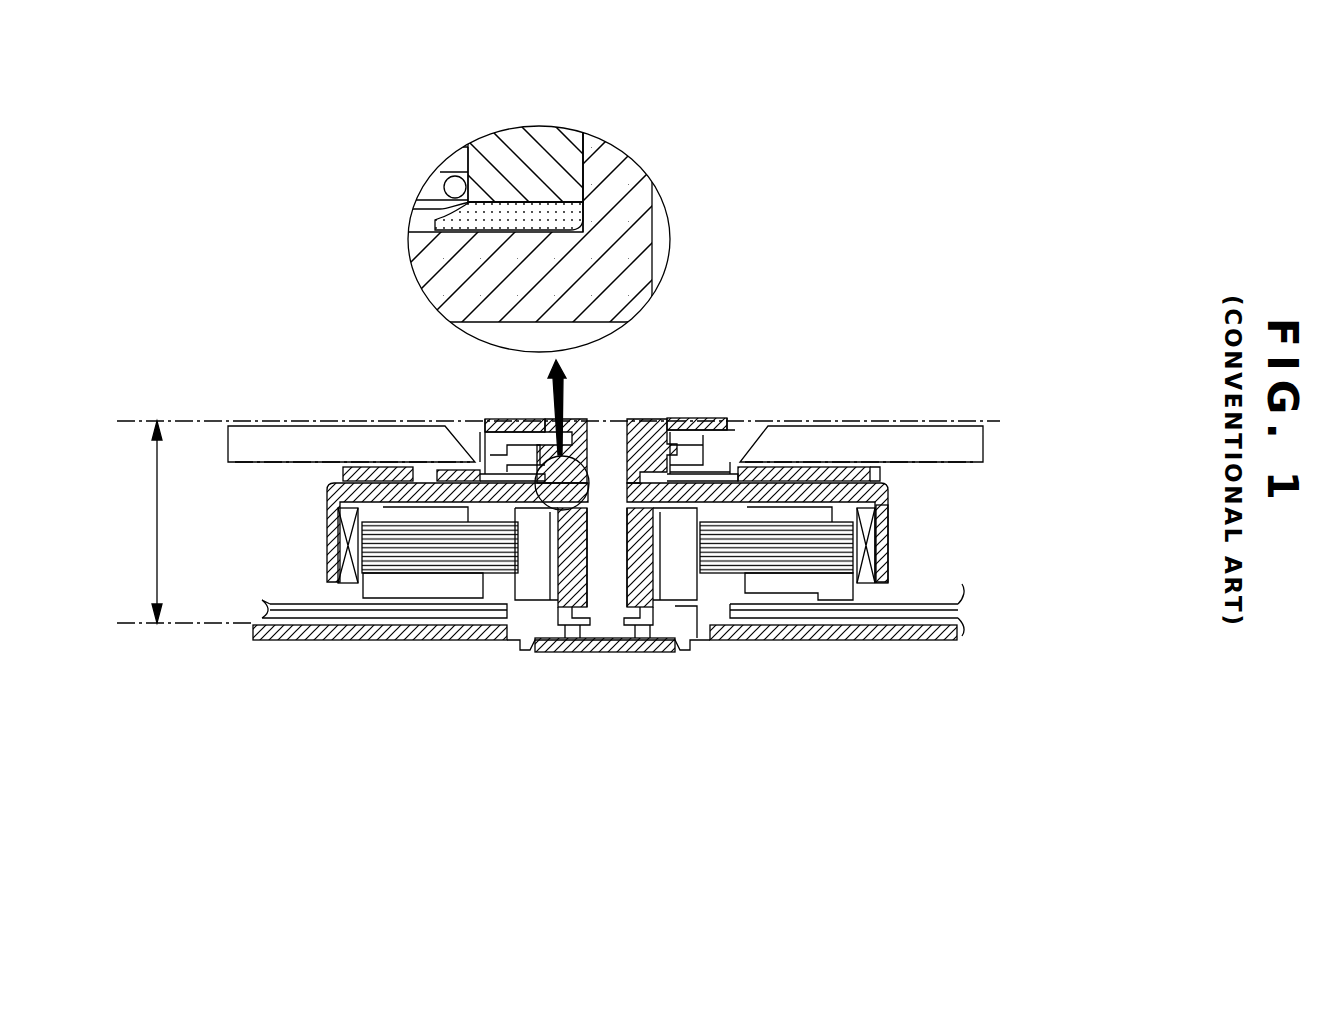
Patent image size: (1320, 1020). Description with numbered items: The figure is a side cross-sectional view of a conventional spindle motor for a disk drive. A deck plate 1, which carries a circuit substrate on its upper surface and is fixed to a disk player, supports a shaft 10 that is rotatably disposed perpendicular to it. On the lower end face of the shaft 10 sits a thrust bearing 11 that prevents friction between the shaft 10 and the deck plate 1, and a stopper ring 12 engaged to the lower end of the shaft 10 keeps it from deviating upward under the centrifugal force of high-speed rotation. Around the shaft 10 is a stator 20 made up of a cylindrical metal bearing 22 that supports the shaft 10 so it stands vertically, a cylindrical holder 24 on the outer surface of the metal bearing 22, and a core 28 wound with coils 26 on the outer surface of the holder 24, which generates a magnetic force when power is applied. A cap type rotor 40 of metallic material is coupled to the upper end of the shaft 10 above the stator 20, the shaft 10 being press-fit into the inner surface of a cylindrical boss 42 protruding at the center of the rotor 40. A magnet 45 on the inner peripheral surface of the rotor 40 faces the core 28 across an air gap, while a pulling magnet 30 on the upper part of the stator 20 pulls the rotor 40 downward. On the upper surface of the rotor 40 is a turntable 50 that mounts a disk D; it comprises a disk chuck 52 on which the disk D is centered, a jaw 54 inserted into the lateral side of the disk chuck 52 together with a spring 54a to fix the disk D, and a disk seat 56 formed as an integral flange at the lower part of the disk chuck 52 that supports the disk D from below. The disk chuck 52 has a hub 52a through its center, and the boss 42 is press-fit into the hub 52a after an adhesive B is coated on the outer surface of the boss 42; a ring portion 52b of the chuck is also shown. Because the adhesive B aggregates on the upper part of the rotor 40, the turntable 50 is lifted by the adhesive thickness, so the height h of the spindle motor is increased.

The deck plate 1 is at (893, 637).
The shaft 10 is at (558, 580).
The thrust bearing 11 is at (633, 655).
The stopper ring 12 is at (590, 552).
The stator 20 is at (480, 588).
The metal bearing 22 is at (647, 567).
The holder 24 is at (683, 620).
The coils 26 is at (758, 590).
The core 28 is at (802, 548).
The pulling magnet 30 is at (480, 515).
The rotor 40 is at (897, 480).
The boss 42 is at (653, 427).
The magnet 45 is at (883, 553).
The turntable 50 is at (323, 473).
The disk chuck 52 is at (713, 399).
The hub 52a is at (668, 422).
The rotor ring 52b is at (777, 467).
The jaw 54 is at (755, 436).
The spring 54a is at (725, 433).
The disk seat 56 is at (878, 468).
The adhesive B is at (465, 148).
The disk D is at (277, 437).
The height h is at (142, 522).